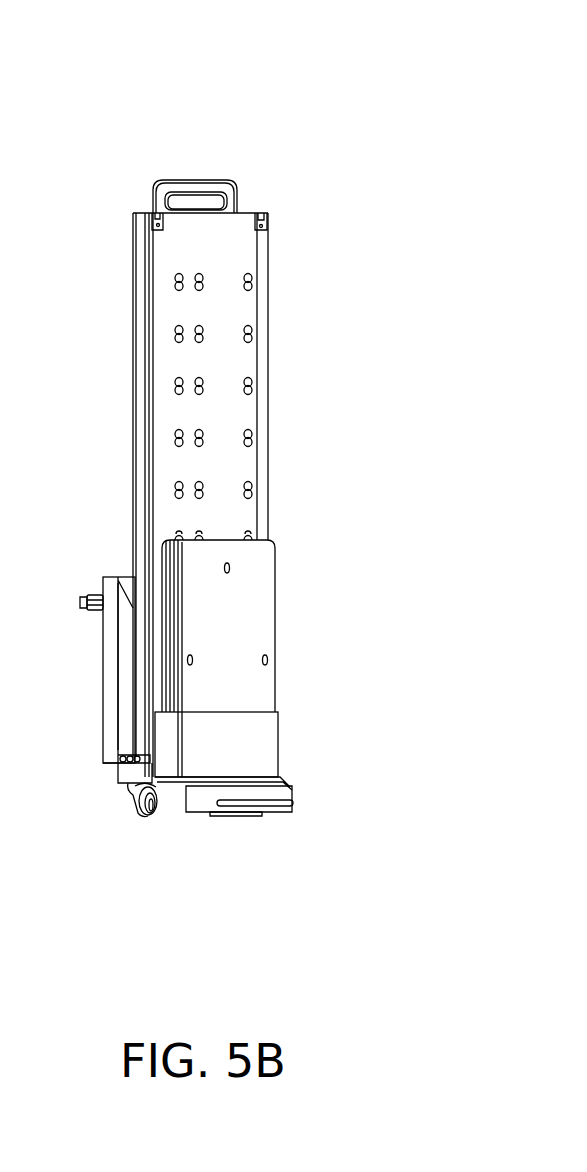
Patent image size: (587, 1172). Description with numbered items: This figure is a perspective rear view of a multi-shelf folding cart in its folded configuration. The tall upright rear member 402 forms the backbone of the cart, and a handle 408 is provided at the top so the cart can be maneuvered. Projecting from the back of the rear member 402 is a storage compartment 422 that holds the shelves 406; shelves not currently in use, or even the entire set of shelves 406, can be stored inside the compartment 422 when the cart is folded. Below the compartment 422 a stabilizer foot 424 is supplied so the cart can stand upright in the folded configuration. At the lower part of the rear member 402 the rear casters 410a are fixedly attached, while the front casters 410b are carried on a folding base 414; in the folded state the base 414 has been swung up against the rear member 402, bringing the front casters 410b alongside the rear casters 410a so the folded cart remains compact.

The rear member 402 is at (183, 250).
The handle 408 is at (198, 185).
The folding base 414 is at (90, 595).
The front casters 410b is at (125, 620).
The shelves 406 is at (257, 610).
The storage compartment 422 is at (257, 746).
The stabilizer foot 424 is at (282, 795).
The rear casters 410a is at (150, 818).